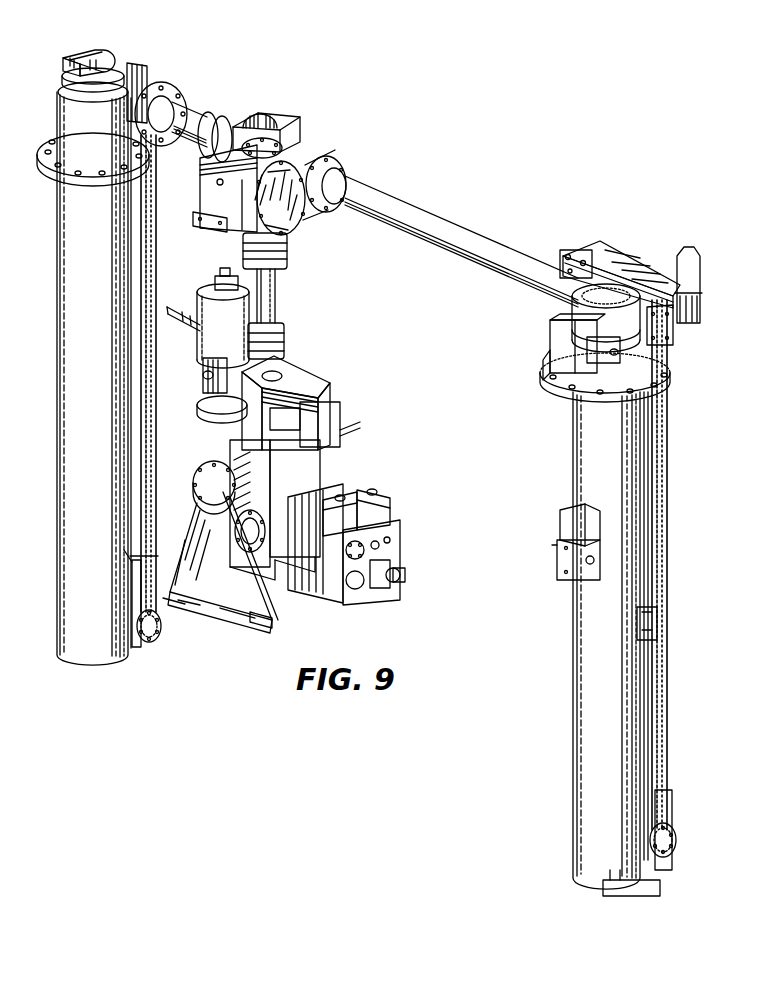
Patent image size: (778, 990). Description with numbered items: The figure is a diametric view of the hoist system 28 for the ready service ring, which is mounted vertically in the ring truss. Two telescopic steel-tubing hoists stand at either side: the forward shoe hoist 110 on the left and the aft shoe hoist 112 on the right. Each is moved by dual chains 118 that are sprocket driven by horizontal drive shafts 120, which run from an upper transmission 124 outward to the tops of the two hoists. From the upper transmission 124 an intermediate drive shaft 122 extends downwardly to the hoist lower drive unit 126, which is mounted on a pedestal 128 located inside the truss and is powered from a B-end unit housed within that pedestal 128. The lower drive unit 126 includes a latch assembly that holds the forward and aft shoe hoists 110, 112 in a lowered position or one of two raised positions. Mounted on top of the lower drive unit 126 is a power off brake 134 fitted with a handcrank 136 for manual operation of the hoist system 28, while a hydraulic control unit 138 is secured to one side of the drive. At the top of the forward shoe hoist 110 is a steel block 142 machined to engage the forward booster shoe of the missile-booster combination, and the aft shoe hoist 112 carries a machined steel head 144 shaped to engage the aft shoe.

The hoist system 28 is at (342, 116).
The forward shoe hoist 110 is at (126, 75).
The aft shoe hoist 112 is at (633, 267).
The dual chains 118 is at (156, 403).
The horizontal drive shafts 120 is at (196, 112).
The intermediate drive shaft 122 is at (278, 292).
The upper transmission 124 is at (302, 222).
The hoist lower drive unit 126 is at (348, 388).
The pedestal 128 is at (216, 578).
The power off brake 134 is at (205, 297).
The handcrank 136 is at (180, 323).
The hydraulic control unit 138 is at (358, 492).
The steel block 142 is at (92, 58).
The machined steel head 144 is at (586, 253).